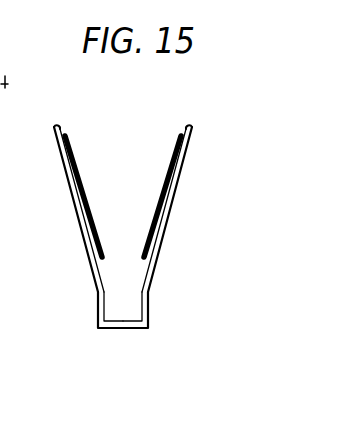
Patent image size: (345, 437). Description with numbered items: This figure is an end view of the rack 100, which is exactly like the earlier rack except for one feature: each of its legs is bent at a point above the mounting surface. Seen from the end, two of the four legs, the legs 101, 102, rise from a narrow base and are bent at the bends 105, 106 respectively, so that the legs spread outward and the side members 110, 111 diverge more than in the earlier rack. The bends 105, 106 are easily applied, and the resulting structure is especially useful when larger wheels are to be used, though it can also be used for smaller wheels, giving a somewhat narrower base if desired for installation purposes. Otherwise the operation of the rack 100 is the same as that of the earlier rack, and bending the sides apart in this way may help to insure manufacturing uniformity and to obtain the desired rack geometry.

The rack 100 is at (152, 159).
The leg 101 is at (82, 234).
The leg 102 is at (165, 232).
The bend 105 is at (97, 293).
The bend 106 is at (149, 295).
The side member 110 is at (77, 168).
The side member 111 is at (161, 204).